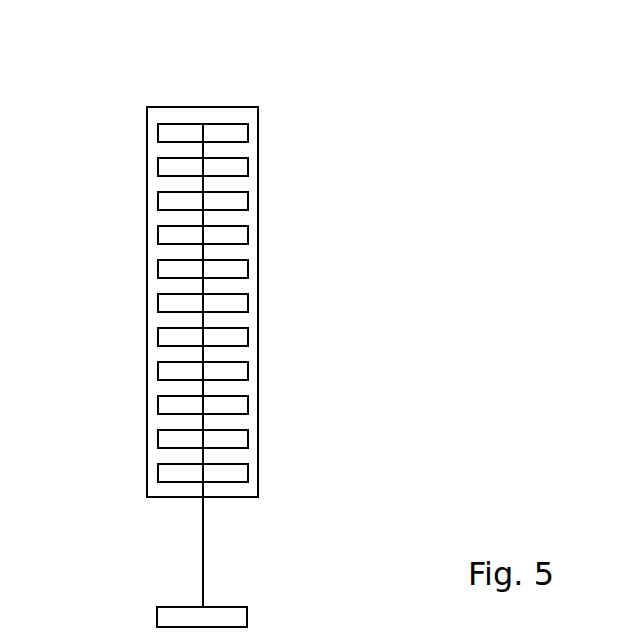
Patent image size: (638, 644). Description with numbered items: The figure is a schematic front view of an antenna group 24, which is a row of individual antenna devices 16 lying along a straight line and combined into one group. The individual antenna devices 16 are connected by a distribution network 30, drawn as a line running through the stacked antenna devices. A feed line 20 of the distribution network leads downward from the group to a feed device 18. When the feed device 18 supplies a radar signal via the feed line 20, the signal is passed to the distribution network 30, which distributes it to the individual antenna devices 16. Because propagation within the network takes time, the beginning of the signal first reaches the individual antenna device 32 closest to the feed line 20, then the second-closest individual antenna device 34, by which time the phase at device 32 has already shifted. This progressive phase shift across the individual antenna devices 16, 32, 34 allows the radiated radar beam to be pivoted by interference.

The antenna group 24 is at (253, 108).
The individual antenna device 16 is at (243, 160).
The distribution network 30 is at (205, 388).
The second-closest individual antenna device 34 is at (243, 430).
The first individual antenna device 32 is at (243, 465).
The feed line 20 is at (201, 543).
The feed device 18 is at (243, 611).